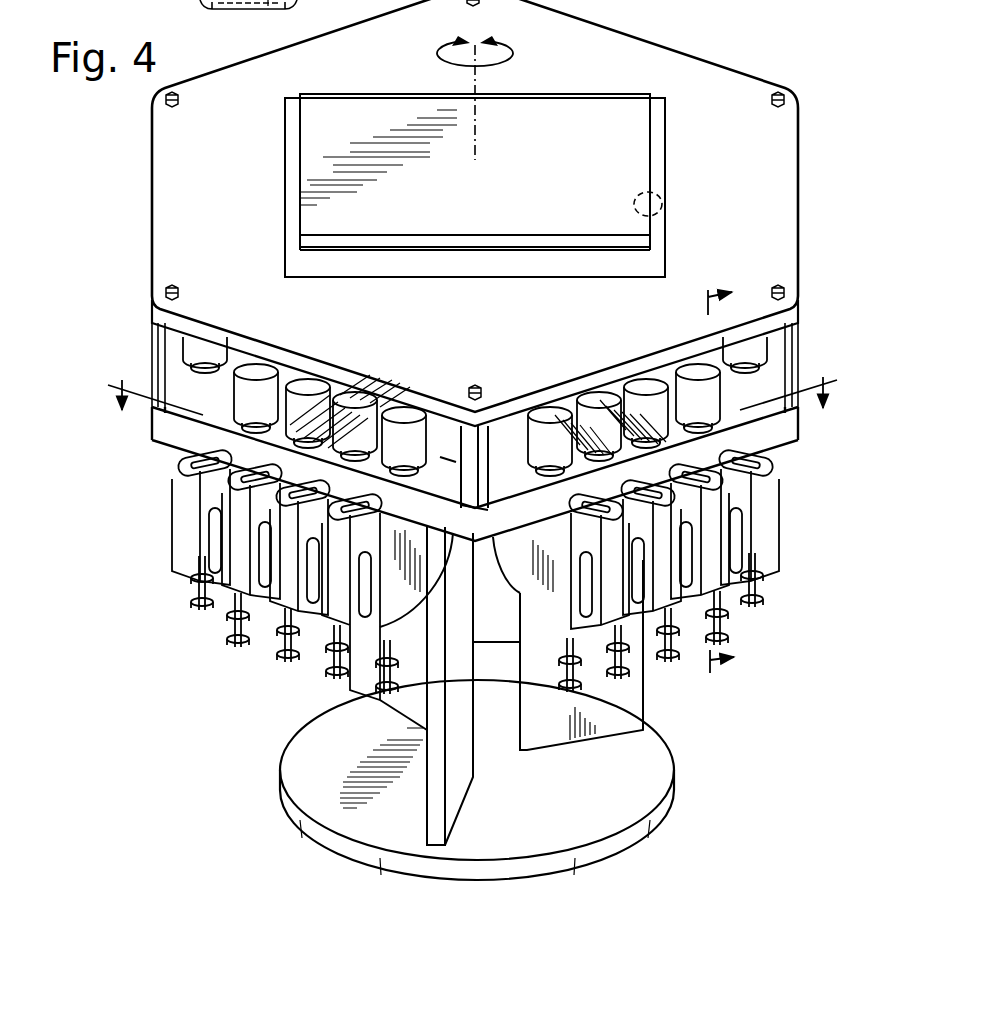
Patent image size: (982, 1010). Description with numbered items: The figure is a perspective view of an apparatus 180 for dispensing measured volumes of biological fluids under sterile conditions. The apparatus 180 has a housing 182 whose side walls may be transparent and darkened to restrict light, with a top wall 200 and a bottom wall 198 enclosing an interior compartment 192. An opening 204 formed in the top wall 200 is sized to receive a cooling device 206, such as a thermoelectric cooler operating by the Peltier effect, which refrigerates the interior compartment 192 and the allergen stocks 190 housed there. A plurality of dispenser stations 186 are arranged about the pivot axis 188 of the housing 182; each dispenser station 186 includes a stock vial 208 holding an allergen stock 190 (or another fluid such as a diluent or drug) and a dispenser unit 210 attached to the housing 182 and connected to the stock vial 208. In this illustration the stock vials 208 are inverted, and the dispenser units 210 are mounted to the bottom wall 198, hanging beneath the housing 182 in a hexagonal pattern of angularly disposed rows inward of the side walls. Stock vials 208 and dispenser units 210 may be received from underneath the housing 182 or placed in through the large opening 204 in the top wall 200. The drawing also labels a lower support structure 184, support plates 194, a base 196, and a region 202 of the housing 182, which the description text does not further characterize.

The apparatus 180 is at (82, 180).
The housing 182 is at (120, 229).
The lower support assembly 184 is at (246, 763).
The dispenser station 186 is at (373, 699).
The pivot axis 188 is at (470, 88).
The allergen stock 190 is at (405, 418).
The interior compartment 192 is at (450, 437).
The support plates 194 is at (460, 782).
The base plate 196 is at (657, 757).
The bottom wall 198 is at (158, 352).
The top wall 200 is at (163, 280).
The plate surface region 202 is at (445, 460).
The opening 204 is at (655, 188).
The cooling device 206 is at (665, 141).
The stock vial 208 is at (257, 380).
The dispenser unit 210 is at (249, 539).